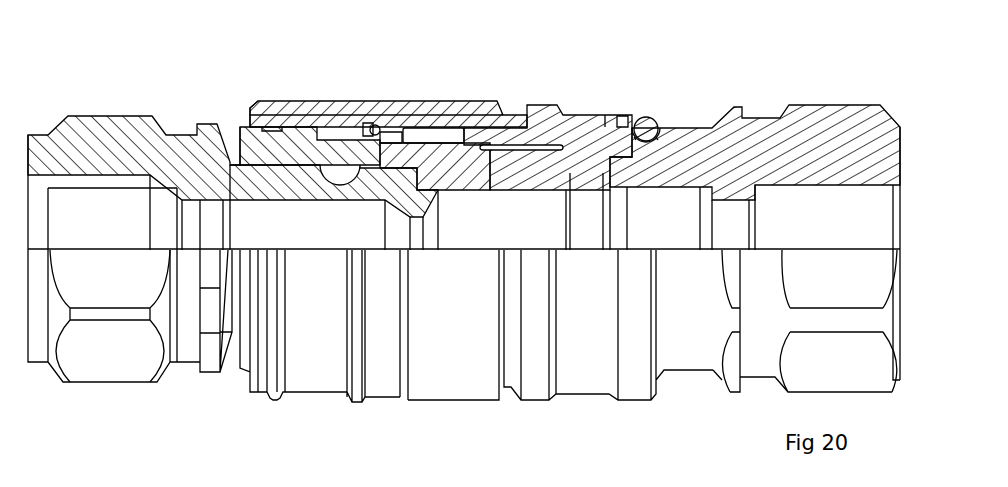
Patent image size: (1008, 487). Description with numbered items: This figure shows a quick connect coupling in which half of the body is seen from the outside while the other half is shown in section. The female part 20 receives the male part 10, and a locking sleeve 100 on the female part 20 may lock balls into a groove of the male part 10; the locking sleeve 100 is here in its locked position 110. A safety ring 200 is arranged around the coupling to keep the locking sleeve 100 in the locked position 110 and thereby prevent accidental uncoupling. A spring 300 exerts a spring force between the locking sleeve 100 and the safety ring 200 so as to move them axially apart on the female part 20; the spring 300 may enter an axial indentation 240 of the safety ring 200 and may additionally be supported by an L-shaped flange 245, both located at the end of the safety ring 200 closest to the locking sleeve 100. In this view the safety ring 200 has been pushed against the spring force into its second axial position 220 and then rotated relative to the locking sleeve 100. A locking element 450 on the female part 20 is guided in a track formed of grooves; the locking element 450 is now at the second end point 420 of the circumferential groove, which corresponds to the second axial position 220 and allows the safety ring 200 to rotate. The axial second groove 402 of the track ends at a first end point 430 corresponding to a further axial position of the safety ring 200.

The male part 10 is at (47, 134).
The locked position 110 is at (252, 104).
The locking sleeve 100 is at (283, 100).
The spring 300 is at (368, 124).
The axial indentation 240 is at (378, 126).
The safety ring 200 is at (537, 103).
The second groove 402 is at (623, 116).
The first end point 430 is at (614, 121).
The second end point 420 is at (648, 117).
The second axial position 220 is at (647, 99).
The female part (body) 20 is at (707, 137).
The L-shaped flange 245 is at (387, 137).
The locking element 450 is at (648, 141).